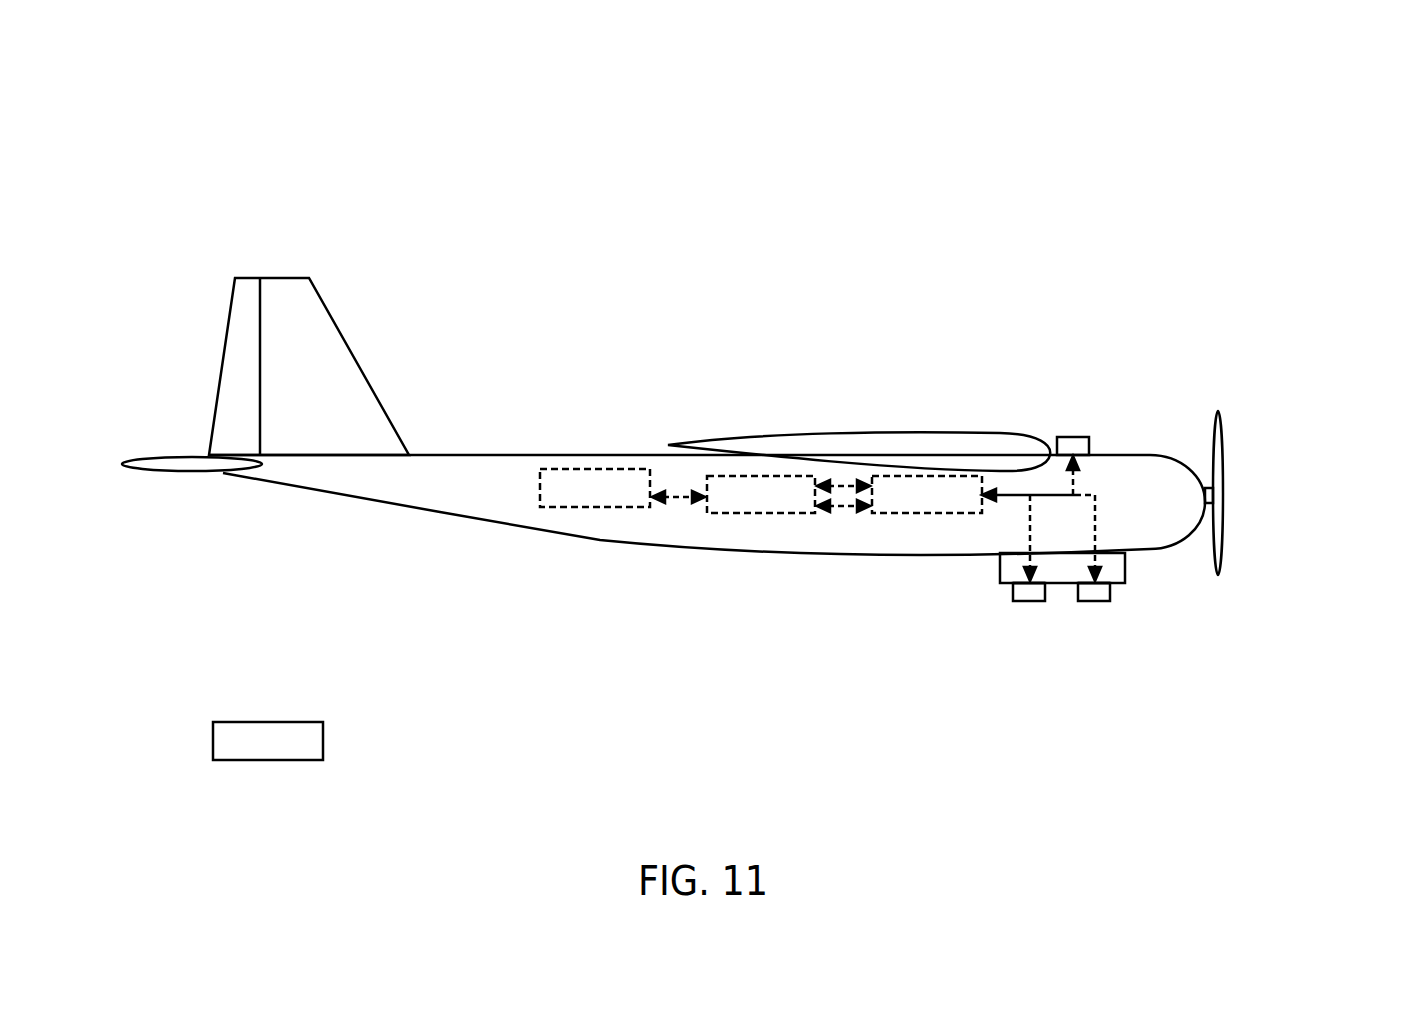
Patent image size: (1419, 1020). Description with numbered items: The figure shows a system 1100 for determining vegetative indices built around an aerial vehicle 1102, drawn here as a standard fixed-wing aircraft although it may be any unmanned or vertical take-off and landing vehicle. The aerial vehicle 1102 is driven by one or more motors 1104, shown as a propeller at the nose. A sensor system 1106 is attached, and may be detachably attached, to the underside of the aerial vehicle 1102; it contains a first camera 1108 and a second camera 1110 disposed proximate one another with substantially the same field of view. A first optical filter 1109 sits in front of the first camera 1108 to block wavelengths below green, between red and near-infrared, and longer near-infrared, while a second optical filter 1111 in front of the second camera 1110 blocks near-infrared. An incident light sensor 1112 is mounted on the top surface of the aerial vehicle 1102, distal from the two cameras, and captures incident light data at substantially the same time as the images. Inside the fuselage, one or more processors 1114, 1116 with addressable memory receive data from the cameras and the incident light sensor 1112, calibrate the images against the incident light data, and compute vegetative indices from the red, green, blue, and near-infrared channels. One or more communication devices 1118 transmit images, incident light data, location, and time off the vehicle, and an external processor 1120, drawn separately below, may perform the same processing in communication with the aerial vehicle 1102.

The system 1100 is at (1288, 99).
The aerial vehicle 1102 is at (282, 278).
The motor 1104 is at (1225, 493).
The sensor system 1106 is at (1127, 568).
The first camera 1108 is at (1022, 601).
The first optical filter 1109 is at (1017, 585).
The second camera 1110 is at (1103, 601).
The second optical filter 1111 is at (1105, 583).
The incident light sensor 1112 is at (1077, 437).
The processor 1114 is at (927, 513).
The processor 1116 is at (760, 513).
The communication device 1118 is at (593, 507).
The external processor 1120 is at (268, 760).